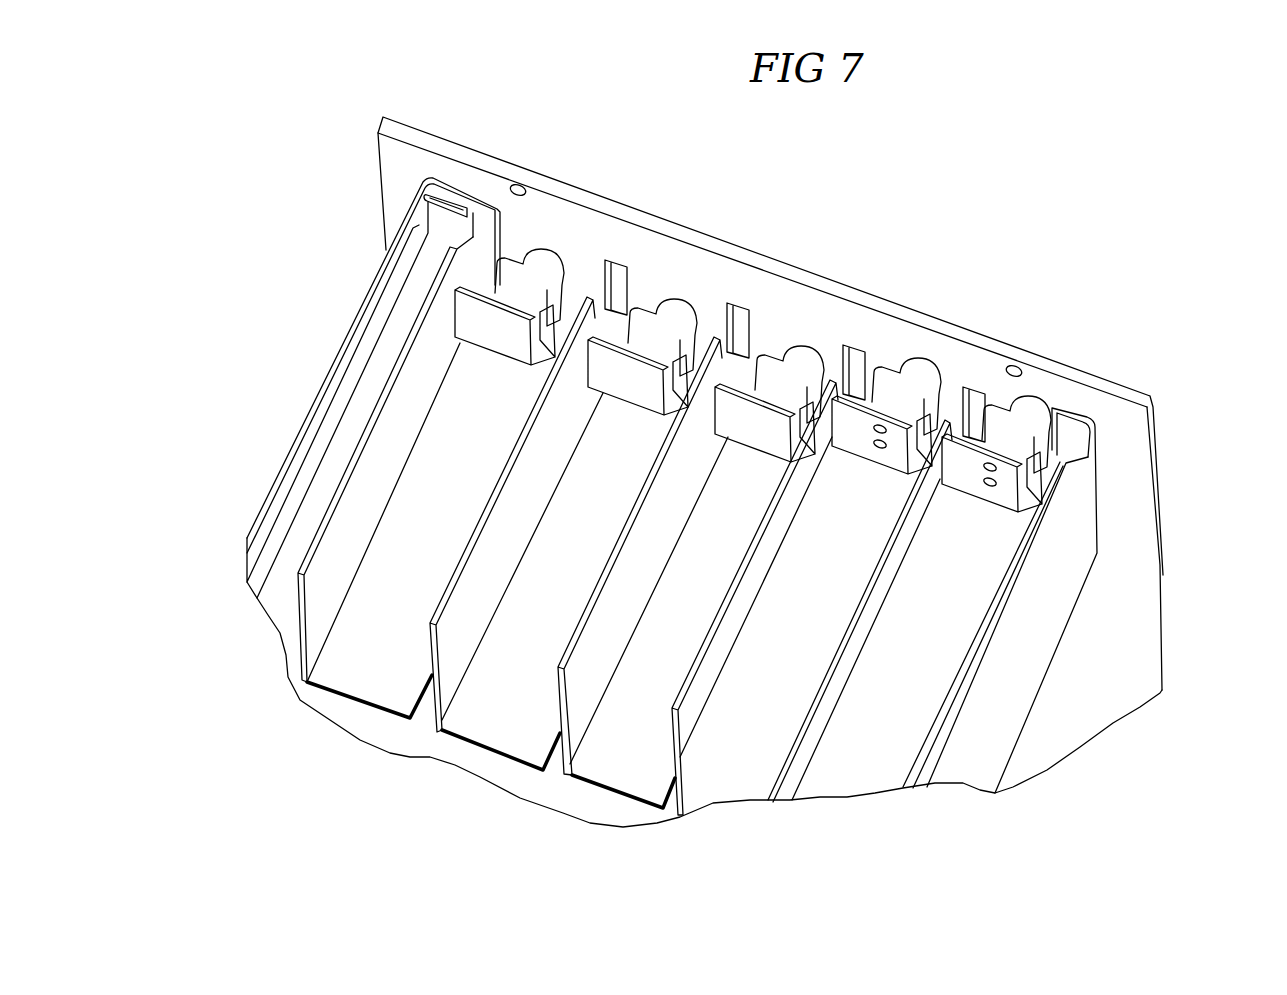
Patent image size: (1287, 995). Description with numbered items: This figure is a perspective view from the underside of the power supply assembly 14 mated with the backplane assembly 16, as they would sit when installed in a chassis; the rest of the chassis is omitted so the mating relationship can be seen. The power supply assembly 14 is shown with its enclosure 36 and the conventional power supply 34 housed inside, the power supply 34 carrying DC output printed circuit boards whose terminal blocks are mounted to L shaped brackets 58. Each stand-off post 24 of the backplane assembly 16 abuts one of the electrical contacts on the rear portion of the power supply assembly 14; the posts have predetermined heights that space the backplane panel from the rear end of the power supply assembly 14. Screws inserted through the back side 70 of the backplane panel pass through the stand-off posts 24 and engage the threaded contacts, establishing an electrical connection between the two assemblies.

The power supply assembly 14 is at (1033, 607).
The backplane assembly 16 is at (690, 223).
The stand-off post 24 is at (540, 257).
The power supply 34 is at (843, 747).
The enclosure 36 is at (357, 297).
The L shaped bracket 58 is at (370, 490).
The back side 70 is at (925, 310).